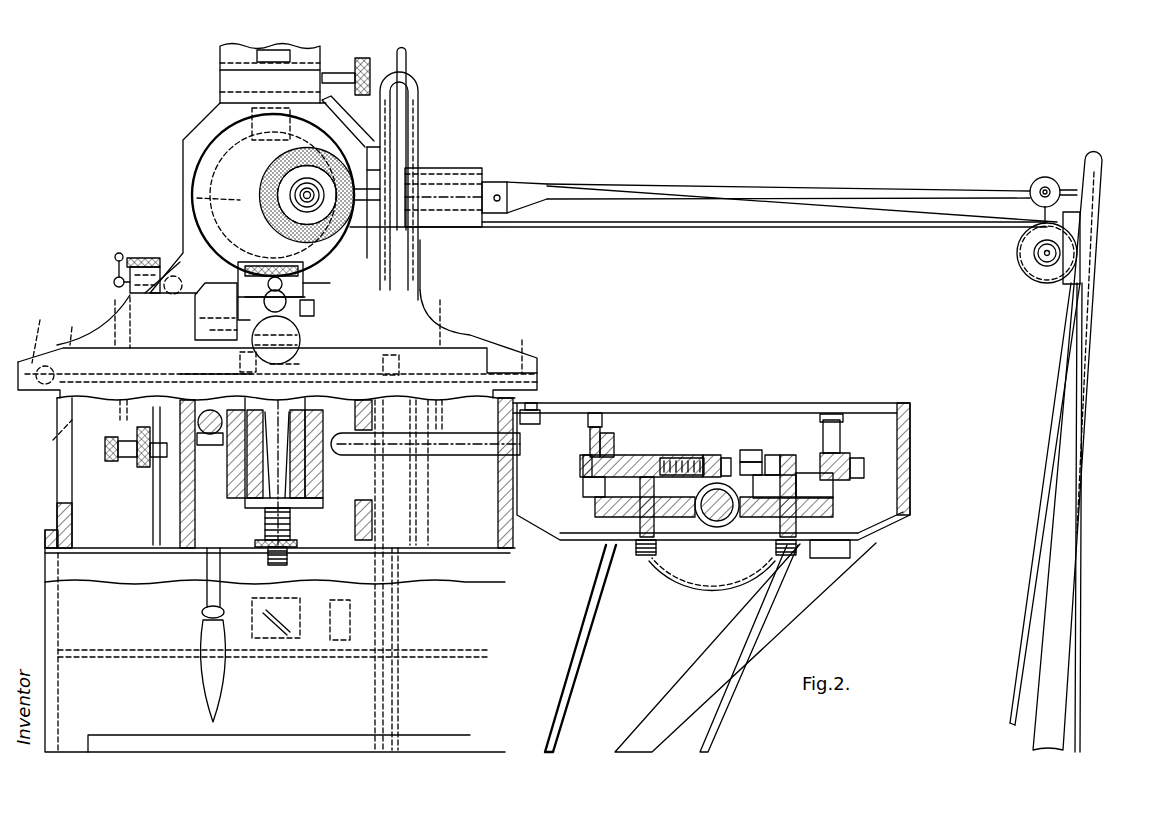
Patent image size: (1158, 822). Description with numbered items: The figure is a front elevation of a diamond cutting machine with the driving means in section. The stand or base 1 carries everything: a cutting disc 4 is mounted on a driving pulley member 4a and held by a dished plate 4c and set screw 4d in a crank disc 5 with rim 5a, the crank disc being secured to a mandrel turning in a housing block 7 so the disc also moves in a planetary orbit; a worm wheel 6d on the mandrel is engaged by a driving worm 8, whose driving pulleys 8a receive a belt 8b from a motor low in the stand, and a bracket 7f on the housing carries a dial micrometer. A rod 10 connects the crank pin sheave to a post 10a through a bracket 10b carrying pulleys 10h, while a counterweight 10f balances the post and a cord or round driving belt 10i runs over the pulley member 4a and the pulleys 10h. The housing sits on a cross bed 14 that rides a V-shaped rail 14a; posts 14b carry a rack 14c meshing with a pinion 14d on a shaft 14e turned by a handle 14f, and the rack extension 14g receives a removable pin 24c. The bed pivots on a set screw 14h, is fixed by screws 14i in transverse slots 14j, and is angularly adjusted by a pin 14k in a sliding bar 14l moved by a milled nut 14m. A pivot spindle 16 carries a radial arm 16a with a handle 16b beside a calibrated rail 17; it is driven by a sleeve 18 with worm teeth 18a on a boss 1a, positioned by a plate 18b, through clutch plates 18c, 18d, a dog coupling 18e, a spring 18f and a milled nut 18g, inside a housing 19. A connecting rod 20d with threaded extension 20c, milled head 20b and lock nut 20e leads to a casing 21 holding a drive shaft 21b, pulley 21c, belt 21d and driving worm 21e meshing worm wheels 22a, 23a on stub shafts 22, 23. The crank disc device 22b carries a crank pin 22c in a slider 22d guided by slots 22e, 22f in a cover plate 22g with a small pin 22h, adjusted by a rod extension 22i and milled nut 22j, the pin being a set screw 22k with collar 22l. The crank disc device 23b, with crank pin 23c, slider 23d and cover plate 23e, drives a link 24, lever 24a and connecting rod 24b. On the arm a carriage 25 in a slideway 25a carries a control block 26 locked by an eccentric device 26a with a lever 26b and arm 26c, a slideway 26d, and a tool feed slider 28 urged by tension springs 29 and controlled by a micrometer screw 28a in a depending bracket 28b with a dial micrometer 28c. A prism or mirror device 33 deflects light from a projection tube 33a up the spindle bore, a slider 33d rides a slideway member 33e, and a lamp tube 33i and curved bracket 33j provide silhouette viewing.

The stand or base 1 is at (58, 530).
The boss 1a is at (255, 522).
The cutting disc 4 is at (293, 202).
The driving pulley member 4a is at (292, 189).
The dished plate 4c is at (297, 187).
The set screw 4d is at (300, 203).
The crank disc 5 is at (230, 138).
The guard rim 5a is at (227, 163).
The worm wheel 6d is at (197, 198).
The housing block 7 is at (193, 222).
The bracket 7f is at (162, 262).
The driving worm 8 is at (250, 108).
The driving pulleys 8a is at (407, 70).
The belt 8b is at (376, 686).
The rod 10 is at (833, 192).
The post 10a is at (1060, 515).
The bracket 10b is at (1047, 180).
The counterweight 10f is at (1078, 228).
The pulleys 10h is at (1040, 281).
The cord or round driving belt 10i is at (848, 222).
The cross bed 14 is at (161, 326).
The V-shaped rail 14a is at (55, 382).
The posts 14b is at (120, 410).
The rack 14c is at (197, 420).
The pinion 14d is at (98, 370).
The shaft 14e is at (157, 460).
The handle 14f is at (210, 597).
The extension of rack member 14g is at (463, 433).
The set screw 14h is at (377, 365).
The screws 14i is at (40, 356).
The transverse slots 14j is at (281, 334).
The pin 14k is at (128, 280).
The sliding bar 14l is at (53, 440).
The milled nut 14m is at (79, 323).
The pivot spindle 16 is at (268, 457).
The radial arm 16a is at (300, 363).
The handle 16b is at (303, 323).
The semicircular flange or rail 17 is at (445, 347).
The sleeve 18 is at (480, 330).
The worm teeth 18a is at (313, 427).
The plate 18b is at (318, 504).
The clutch plate 18c is at (305, 512).
The clutch plate 18d is at (256, 518).
The dog coupling 18e is at (260, 530).
The spring 18f is at (292, 535).
The milled nut 18g is at (275, 548).
The housing 19 is at (323, 469).
The milled head 20b is at (143, 468).
The threaded extension 20c is at (108, 450).
The connecting rod 20d is at (195, 480).
The nut 20e is at (128, 458).
The casing 21 is at (916, 465).
The drive shaft 21b is at (700, 528).
The pulley 21c is at (673, 570).
The belt 21d is at (727, 693).
The driving worm 21e is at (714, 528).
The stub shaft 22 is at (617, 523).
The worm wheel 22a is at (600, 504).
The variable throw crank disc device 22b is at (587, 477).
The crank pin 22c is at (603, 425).
The crank slider 22d is at (582, 465).
The slot 22e is at (645, 460).
The slot 22f is at (727, 457).
The cover plate 22g is at (675, 460).
The small pin 22h is at (710, 453).
The screwthreaded rod extension 22i is at (716, 458).
The milled nut 22j is at (720, 466).
The set screw 22k is at (598, 427).
The collar 22l is at (612, 432).
The stub shaft 23 is at (820, 545).
The worm wheel 23a is at (852, 548).
The crank disc device 23b is at (835, 500).
The crank pin 23c is at (800, 467).
The slider 23d is at (838, 486).
The cover plate 23e is at (770, 460).
The link 24 is at (850, 460).
The lever 24a is at (856, 468).
The connecting rod 24b is at (637, 437).
The removable pin 24c is at (545, 410).
The carriage 25 is at (250, 364).
The geometric ball bearing slideway 25a is at (231, 363).
The control block 26 is at (312, 334).
The eccentric locking device 26a is at (212, 331).
The lever 26b is at (216, 311).
The feed arm 26c is at (340, 307).
The geometric ball bearing slideway 26d is at (330, 287).
The tool feed slider 28 is at (305, 270).
The micrometer screw device 28a is at (218, 318).
The depending bracket 28b is at (303, 305).
The dial face micrometer device 28c is at (303, 275).
The tension spring 29 is at (240, 277).
The right-angled prism or mirror device 33 is at (273, 638).
The projection tube 33a is at (340, 642).
The slider 33d is at (240, 63).
The slideway member 33e is at (237, 93).
The tube 33i is at (440, 180).
The curved bracket 33j is at (418, 97).